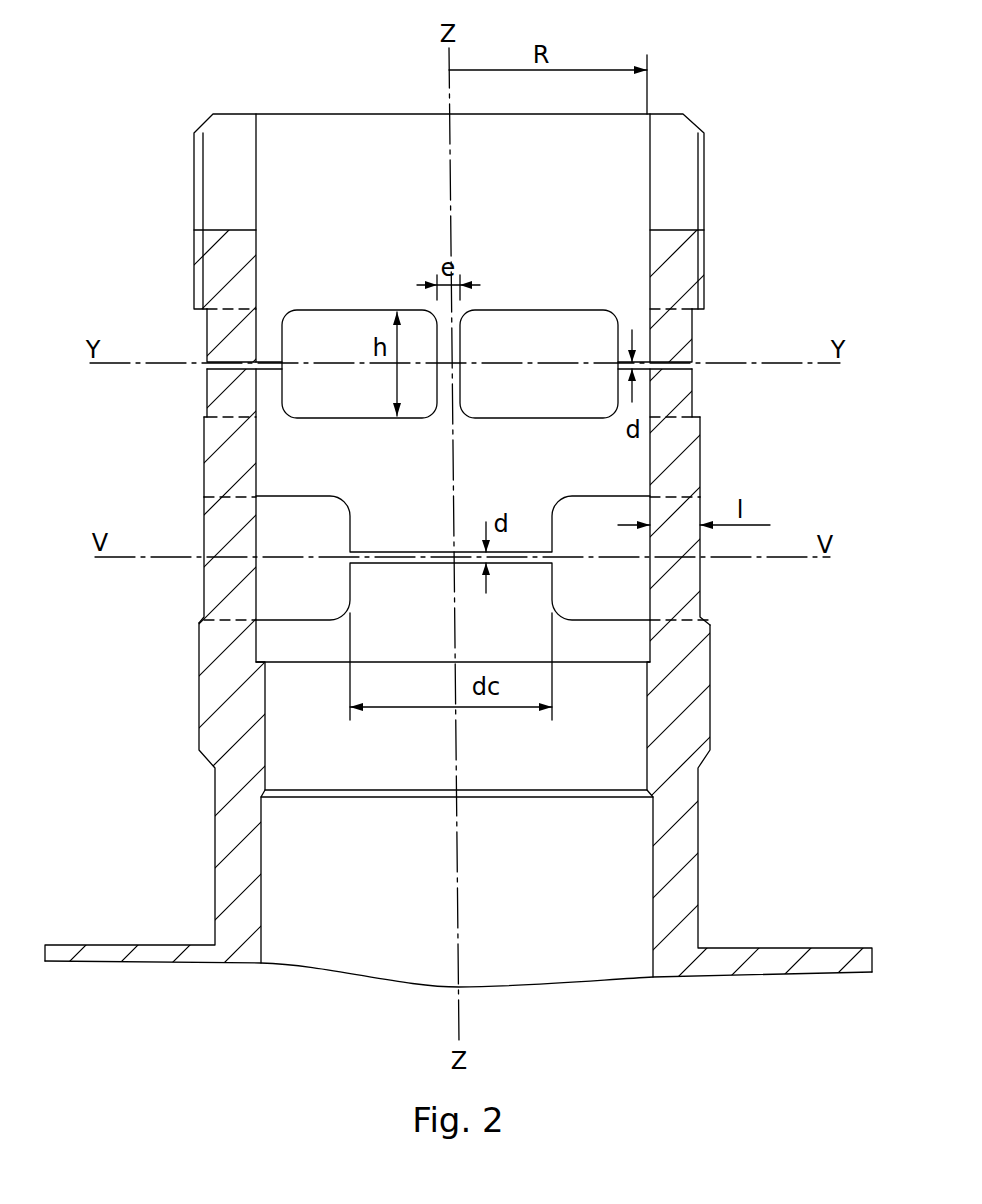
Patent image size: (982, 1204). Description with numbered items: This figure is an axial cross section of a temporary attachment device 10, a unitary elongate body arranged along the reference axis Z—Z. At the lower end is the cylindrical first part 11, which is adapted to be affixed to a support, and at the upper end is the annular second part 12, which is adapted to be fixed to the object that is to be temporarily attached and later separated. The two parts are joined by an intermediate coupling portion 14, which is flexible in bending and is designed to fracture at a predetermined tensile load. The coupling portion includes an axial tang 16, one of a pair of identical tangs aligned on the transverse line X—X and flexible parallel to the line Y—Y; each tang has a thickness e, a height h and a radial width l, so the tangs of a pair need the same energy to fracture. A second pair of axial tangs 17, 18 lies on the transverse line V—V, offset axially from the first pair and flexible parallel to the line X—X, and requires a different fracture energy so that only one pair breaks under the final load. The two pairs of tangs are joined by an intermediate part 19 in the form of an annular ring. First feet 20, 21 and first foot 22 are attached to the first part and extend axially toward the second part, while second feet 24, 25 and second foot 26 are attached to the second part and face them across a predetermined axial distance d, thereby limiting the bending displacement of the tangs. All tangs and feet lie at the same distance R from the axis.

The temporary attachment device 10 is at (772, 232).
The cylindrical first part 11 is at (712, 707).
The annular second part 12 is at (707, 206).
The intermediate coupling portion 14 is at (162, 458).
The axial tang 16 is at (478, 332).
The axial tang 17 is at (205, 593).
The axial tang 18 is at (703, 577).
The intermediate part 19 is at (703, 455).
The first foot 20 is at (208, 388).
The first foot 21 is at (697, 396).
The first foot 22 is at (347, 590).
The second foot 24 is at (207, 338).
The second foot 25 is at (697, 340).
The second foot 26 is at (347, 518).